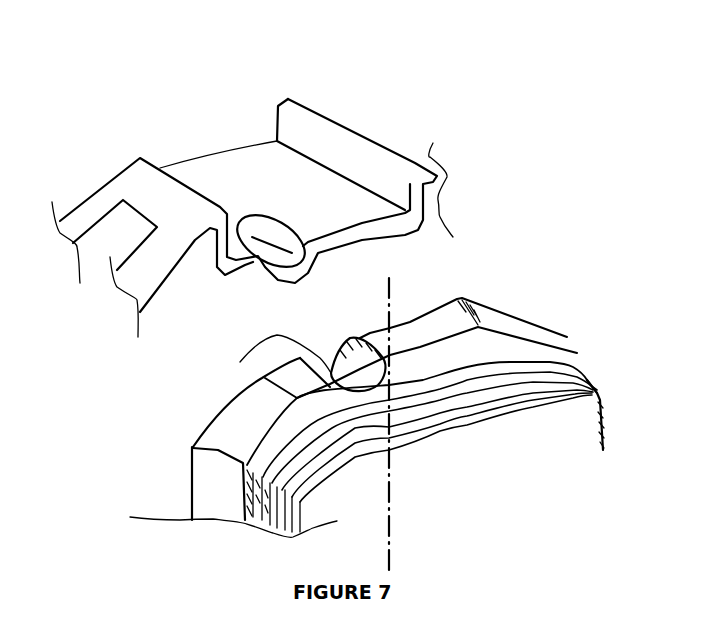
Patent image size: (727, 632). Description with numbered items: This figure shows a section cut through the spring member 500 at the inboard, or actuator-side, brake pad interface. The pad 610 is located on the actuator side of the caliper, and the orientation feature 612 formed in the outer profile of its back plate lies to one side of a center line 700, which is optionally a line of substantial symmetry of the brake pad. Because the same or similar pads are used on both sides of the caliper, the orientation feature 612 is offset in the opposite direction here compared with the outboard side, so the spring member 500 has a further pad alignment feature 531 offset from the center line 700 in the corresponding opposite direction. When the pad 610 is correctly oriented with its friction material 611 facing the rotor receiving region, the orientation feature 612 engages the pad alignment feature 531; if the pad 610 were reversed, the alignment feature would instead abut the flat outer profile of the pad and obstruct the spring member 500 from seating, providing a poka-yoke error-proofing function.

The spring member 500 is at (215, 176).
The pad alignment feature 531 is at (260, 227).
The pad 610 is at (410, 327).
The friction material 611 is at (570, 442).
The orientation feature 612 is at (240, 362).
The center line 700 is at (390, 527).